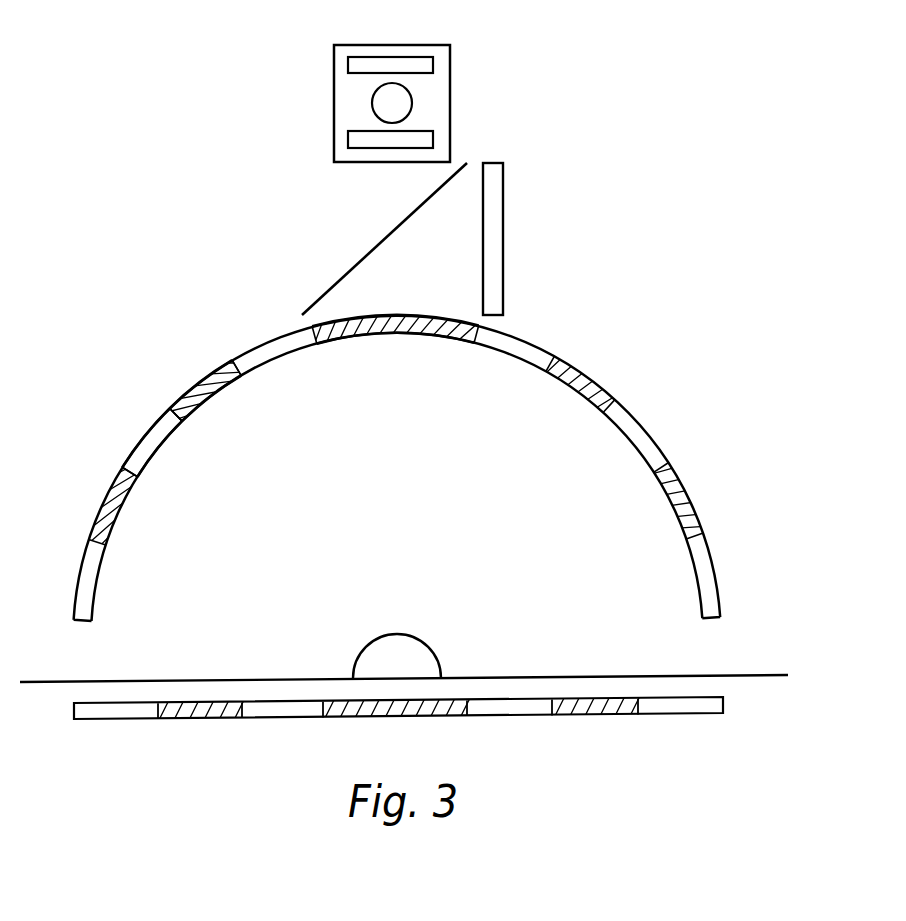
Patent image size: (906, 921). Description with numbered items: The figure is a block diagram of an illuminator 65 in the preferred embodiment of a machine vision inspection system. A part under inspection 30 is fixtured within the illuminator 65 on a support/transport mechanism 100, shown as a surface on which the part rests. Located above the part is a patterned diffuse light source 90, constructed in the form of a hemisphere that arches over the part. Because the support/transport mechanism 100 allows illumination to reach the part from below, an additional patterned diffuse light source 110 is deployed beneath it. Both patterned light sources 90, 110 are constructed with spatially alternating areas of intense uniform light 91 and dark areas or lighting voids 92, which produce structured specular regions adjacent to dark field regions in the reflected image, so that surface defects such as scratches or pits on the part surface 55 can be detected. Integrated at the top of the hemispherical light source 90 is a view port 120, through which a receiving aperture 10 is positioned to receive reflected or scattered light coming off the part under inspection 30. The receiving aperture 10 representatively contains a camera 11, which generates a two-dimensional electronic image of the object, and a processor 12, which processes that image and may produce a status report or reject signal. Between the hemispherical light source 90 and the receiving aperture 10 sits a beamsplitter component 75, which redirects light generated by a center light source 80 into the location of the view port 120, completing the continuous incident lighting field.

The illuminator 65 is at (90, 172).
The receiving aperture 10 is at (372, 105).
The camera 11 is at (433, 139).
The processor 12 is at (433, 65).
The beamsplitter component 75 is at (380, 242).
The center light source 80 is at (503, 235).
The patterned diffuse light source 90 is at (604, 386).
The area of intense uniform light 91 is at (160, 436).
The lighting void 92 is at (222, 383).
The view port 120 is at (398, 334).
The part surface 55 is at (435, 655).
The part under inspection 30 is at (410, 671).
The support/transport mechanism 100 is at (738, 675).
The additional patterned diffuse light source 110 is at (183, 721).